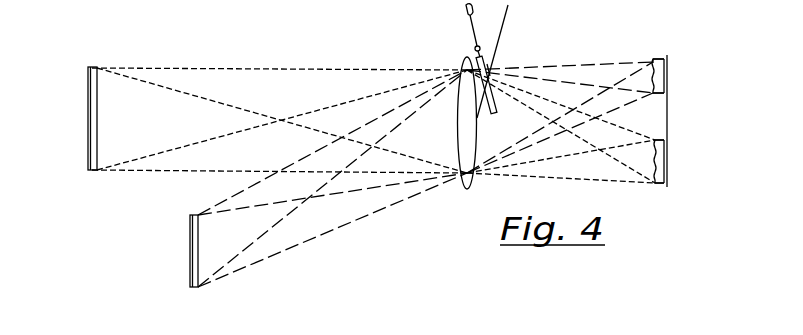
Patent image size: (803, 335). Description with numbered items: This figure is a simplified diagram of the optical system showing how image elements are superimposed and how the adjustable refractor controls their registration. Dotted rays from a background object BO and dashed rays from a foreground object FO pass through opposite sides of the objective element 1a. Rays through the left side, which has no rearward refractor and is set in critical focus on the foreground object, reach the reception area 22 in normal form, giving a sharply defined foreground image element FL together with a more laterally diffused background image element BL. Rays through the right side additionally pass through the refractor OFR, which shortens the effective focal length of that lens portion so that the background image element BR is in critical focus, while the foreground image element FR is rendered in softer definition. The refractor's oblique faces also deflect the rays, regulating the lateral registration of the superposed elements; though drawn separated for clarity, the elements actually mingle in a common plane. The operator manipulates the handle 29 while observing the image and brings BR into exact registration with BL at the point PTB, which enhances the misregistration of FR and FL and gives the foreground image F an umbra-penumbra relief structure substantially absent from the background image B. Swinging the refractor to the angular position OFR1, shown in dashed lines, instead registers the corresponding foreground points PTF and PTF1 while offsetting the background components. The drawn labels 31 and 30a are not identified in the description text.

The background object BO is at (92, 140).
The foreground object FO is at (195, 261).
The objective element 1a is at (467, 140).
The handle 29 is at (467, 11).
The refractor OFR is at (481, 62).
The refractor in diverse angular position OFR1 is at (560, 63).
The reception area 22 is at (668, 133).
The foreground image F is at (657, 83).
The foreground image element FR is at (661, 64).
The foreground image element FL is at (665, 71).
The foreground image point PTF is at (663, 77).
The foreground image point PTF1 is at (655, 63).
The background image B is at (663, 168).
The background registration point PTB is at (743, 187).
The background image element BL is at (658, 183).
The background image element BR is at (655, 183).
The object plane 31 is at (180, 326).
The image plane 30a is at (610, 334).